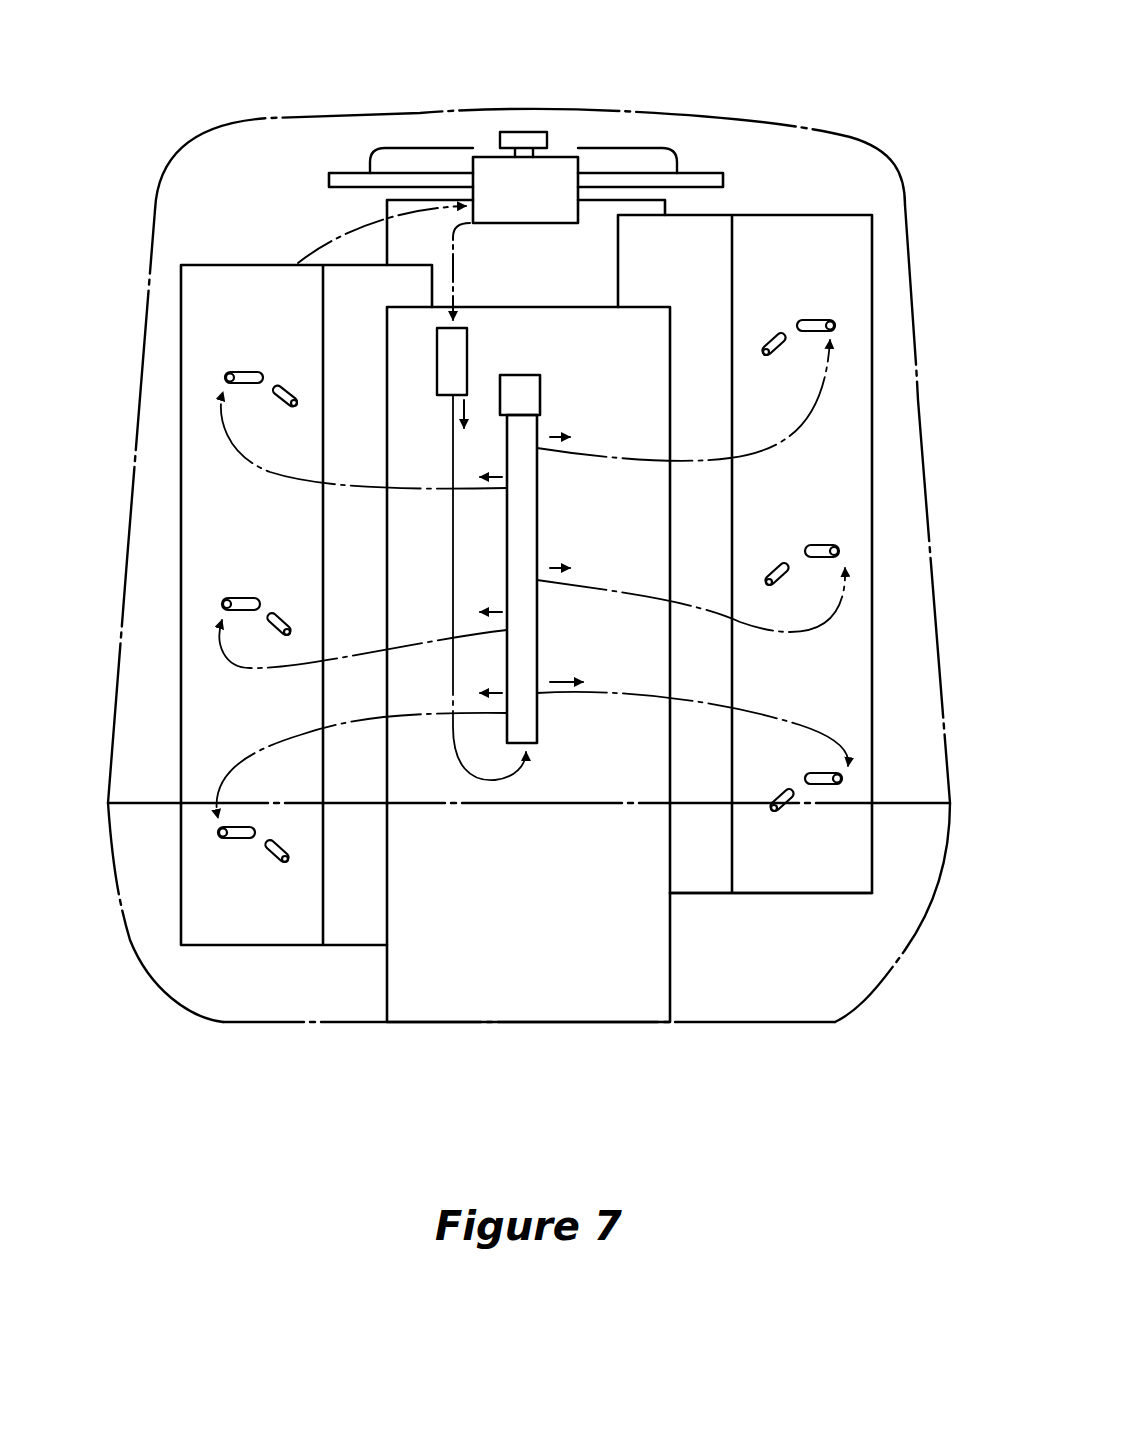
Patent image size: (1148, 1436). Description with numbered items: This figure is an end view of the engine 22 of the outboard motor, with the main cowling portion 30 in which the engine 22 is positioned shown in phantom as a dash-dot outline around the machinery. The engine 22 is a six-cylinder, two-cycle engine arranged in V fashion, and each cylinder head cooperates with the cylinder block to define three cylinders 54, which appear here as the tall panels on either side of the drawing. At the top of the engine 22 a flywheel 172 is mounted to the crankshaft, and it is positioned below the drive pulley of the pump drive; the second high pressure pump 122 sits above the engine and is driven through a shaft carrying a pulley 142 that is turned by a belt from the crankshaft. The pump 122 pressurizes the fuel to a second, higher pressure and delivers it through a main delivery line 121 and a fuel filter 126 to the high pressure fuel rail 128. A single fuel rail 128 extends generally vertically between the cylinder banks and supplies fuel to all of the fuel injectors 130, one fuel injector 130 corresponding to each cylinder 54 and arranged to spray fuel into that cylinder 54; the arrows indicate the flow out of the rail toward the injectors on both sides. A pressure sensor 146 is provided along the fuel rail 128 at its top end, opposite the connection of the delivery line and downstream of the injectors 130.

The main cowling portion 30 is at (760, 122).
The engine 22 is at (824, 190).
The cylinder 54 is at (780, 877).
The second high pressure pump 122 is at (493, 183).
The pulley 142 is at (535, 130).
The flywheel 172 is at (648, 157).
The fluid supply line 121 is at (455, 285).
The fuel filter 126 is at (447, 350).
The pressure sensor 146 is at (530, 392).
The high pressure fuel rail 128 is at (527, 519).
The fuel injector 130 is at (243, 368).